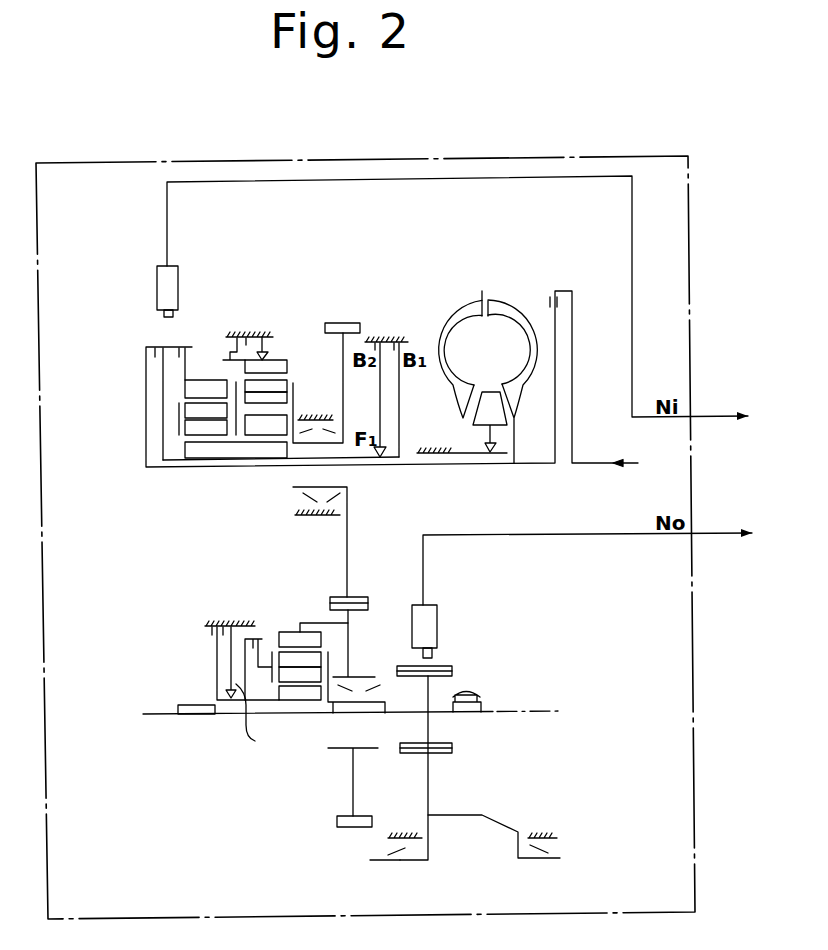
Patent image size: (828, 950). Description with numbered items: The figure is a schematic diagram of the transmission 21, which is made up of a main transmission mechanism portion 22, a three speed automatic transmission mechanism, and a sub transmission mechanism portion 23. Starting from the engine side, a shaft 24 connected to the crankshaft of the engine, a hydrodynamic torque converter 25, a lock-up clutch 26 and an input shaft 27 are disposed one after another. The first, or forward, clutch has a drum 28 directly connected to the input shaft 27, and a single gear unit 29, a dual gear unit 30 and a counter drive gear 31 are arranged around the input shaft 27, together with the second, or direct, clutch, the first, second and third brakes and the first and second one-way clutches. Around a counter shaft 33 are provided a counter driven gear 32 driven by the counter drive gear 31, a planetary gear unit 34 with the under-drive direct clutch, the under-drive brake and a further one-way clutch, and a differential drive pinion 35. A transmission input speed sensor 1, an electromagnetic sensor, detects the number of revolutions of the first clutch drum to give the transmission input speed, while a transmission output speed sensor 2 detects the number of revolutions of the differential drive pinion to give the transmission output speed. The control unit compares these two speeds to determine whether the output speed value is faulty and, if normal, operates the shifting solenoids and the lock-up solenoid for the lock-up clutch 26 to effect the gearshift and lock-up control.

The transmission input speed sensor 1 is at (178, 266).
The transmission output speed sensor 2 is at (437, 605).
The transmission 21 is at (390, 142).
The main transmission mechanism portion 22 is at (178, 483).
The sub transmission mechanism portion 23 is at (173, 640).
The shaft 24 is at (600, 466).
The hydrodynamic torque converter 25 is at (474, 292).
The lock-up clutch 26 is at (553, 291).
The input shaft 27 is at (245, 467).
The drum 28 is at (200, 333).
The single gear unit 29 is at (207, 374).
The dual gear unit 30 is at (292, 359).
The counter drive gear 31 is at (347, 323).
The counter driven gear 32 is at (352, 828).
The counter shaft 33 is at (218, 728).
The planetary gear unit 34 is at (293, 623).
The differential drive pinion 35 is at (445, 666).